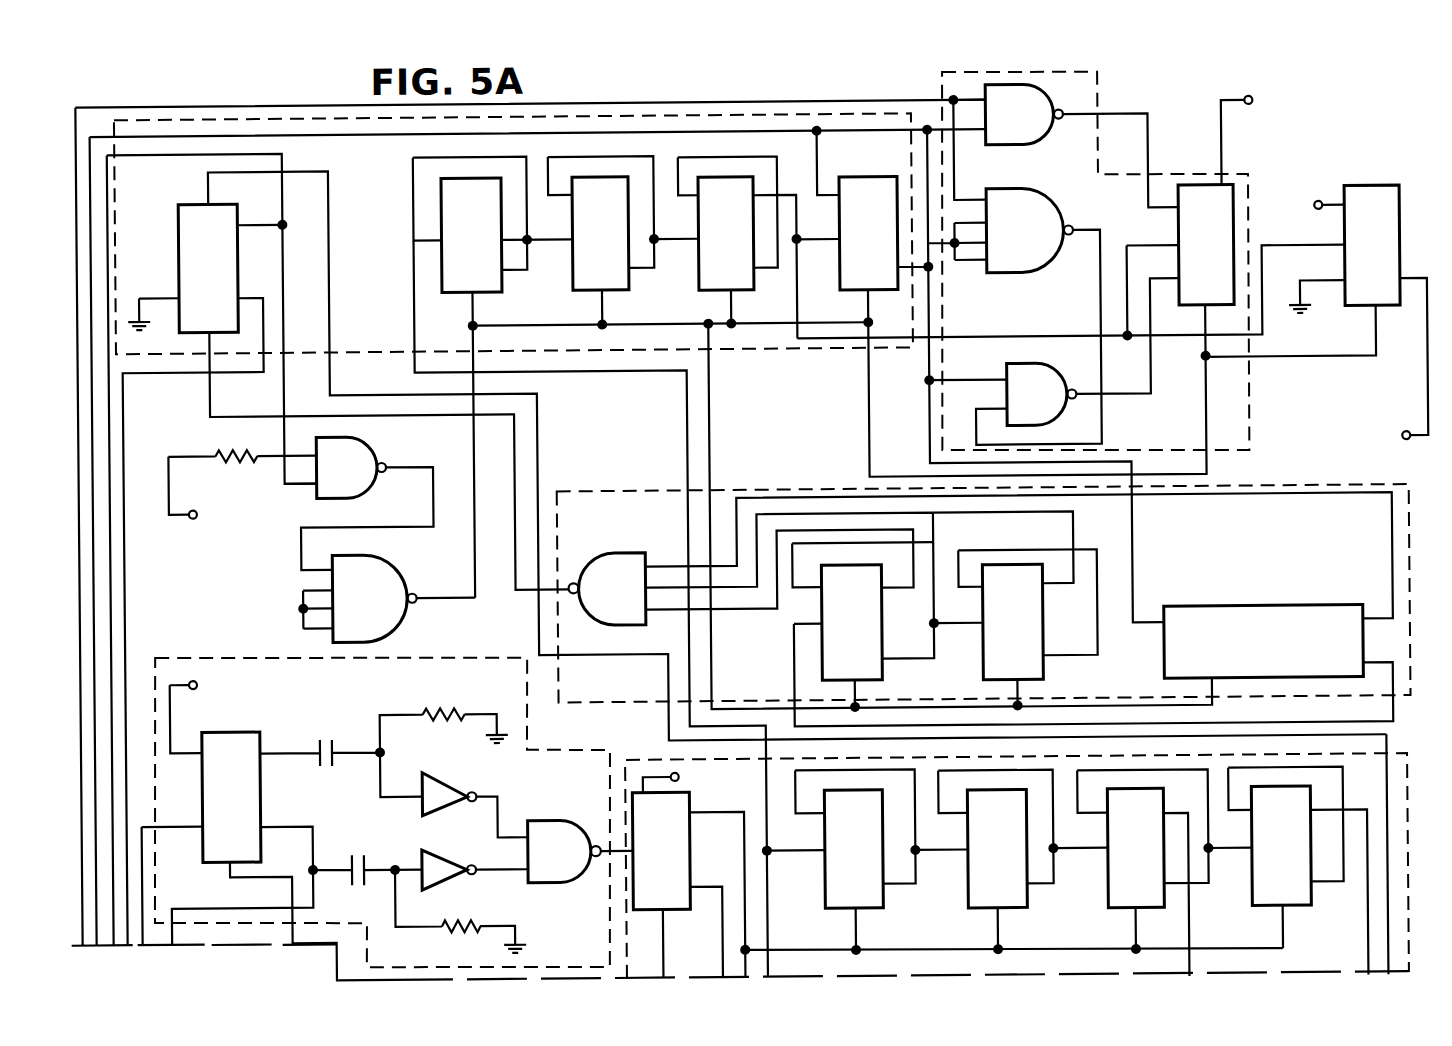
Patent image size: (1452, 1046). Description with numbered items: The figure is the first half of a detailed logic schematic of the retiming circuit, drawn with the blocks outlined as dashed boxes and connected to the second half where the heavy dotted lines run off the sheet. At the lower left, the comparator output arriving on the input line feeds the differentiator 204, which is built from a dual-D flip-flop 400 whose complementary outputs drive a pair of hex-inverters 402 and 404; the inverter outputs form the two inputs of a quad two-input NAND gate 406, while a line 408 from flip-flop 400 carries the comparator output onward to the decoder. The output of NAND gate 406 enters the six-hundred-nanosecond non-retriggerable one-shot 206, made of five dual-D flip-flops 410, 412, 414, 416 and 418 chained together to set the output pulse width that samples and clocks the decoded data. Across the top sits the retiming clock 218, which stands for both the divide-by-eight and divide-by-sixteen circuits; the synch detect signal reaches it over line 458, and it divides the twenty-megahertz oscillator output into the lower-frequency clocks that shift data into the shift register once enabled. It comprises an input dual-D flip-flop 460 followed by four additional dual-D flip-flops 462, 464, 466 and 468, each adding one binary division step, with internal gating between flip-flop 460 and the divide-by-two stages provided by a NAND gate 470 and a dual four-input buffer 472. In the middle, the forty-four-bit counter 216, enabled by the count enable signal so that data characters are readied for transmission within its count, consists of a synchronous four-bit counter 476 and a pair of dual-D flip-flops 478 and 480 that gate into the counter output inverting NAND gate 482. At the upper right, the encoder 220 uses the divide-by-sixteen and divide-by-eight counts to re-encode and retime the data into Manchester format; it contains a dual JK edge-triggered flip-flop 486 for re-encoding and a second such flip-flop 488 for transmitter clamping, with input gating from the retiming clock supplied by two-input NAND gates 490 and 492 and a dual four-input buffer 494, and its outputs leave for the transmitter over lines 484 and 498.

The differentiator 204 is at (221, 651).
The 600-nanosecond non-retriggerable one-shot 206 is at (628, 758).
The 44-bit counter 216 is at (627, 488).
The retiming clock 218 is at (675, 116).
The encoder 220 is at (944, 74).
The dual-D flip-flop 400 is at (256, 741).
The hex-inverter 402 is at (447, 790).
The hex-inverter 404 is at (437, 857).
The quad 2-input NAND gate 406 is at (548, 870).
The line 408 is at (291, 823).
The dual-D flip-flop 410 is at (681, 905).
The dual-D flip-flop 412 is at (840, 909).
The dual-D flip-flop 414 is at (959, 907).
The dual-D flip-flop 416 is at (1117, 908).
The dual-D flip-flop 418 is at (1267, 909).
The line 458 is at (1146, 740).
The input dual-D flip-flop 460 is at (201, 199).
The dual-D flip-flop 462 is at (443, 220).
The dual-D flip-flop 464 is at (584, 284).
The dual-D flip-flop 466 is at (711, 284).
The dual-D flip-flop 468 is at (892, 156).
The NAND gate 470 is at (356, 457).
The dual 4-input buffer 472 is at (383, 577).
The synchronous four-bit counter 476 is at (1177, 610).
The dual-D flip-flop 478 is at (826, 654).
The dual-D flip-flop 480 is at (987, 662).
The inverting NAND gate 482 is at (630, 561).
The line 484 is at (1222, 120).
The dual JK edge triggered flip-flop 486 is at (1181, 233).
The dual JK edge triggered flip-flop 488 is at (1365, 189).
The two input NAND gate 490 is at (1028, 130).
The two input NAND gate 492 is at (1070, 408).
The dual four input buffer 494 is at (1028, 258).
The line 498 is at (1427, 372).